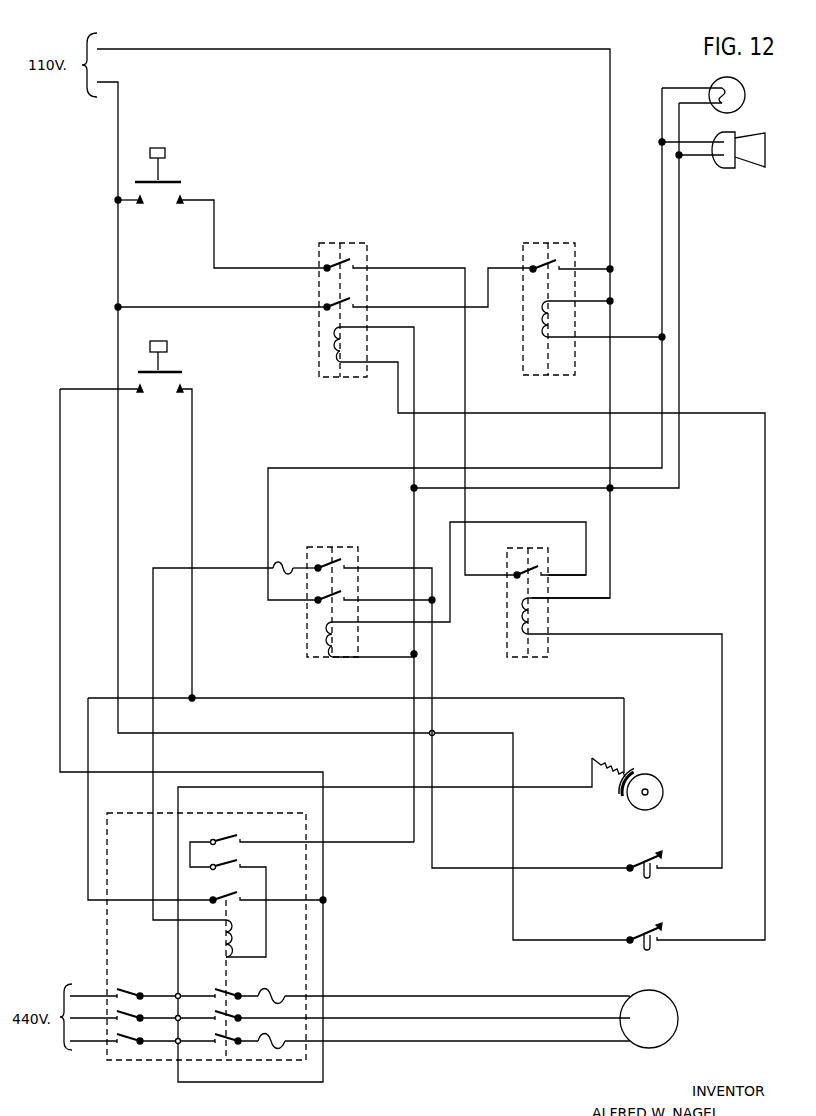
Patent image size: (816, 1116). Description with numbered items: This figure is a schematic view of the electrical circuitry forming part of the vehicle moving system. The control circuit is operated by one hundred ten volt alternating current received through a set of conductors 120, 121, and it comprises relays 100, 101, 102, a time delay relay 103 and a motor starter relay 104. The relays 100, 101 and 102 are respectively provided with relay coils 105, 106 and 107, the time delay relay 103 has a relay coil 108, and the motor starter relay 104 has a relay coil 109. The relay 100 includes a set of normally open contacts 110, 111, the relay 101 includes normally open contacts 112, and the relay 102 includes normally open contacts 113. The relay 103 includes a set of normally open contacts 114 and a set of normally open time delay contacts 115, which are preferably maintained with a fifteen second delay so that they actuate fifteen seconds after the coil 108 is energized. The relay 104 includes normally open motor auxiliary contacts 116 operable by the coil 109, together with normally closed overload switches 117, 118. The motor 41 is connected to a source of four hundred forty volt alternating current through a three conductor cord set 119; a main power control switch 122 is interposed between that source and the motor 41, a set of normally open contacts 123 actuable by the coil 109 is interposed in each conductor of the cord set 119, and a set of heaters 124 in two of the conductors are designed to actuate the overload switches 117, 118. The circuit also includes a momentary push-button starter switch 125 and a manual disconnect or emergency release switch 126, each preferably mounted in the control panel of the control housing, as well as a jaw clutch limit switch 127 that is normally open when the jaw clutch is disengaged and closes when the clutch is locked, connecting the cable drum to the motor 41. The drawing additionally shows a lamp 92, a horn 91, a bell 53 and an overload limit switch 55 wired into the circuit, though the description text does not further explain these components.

The conductor 121 is at (123, 49).
The conductor 120 is at (119, 83).
The momentary push-button starter switch 125 is at (165, 150).
The emergency release switch 126 is at (168, 348).
The relay 100 is at (367, 243).
The relay 101 is at (550, 243).
The relay 102 is at (507, 652).
The time delay relay 103 is at (349, 547).
The motor starter relay 104 is at (106, 962).
The relay coil 105 is at (335, 345).
The relay coil 106 is at (542, 322).
The relay coil 107 is at (530, 626).
The relay coil 108 is at (327, 641).
The relay coil 109 is at (226, 950).
The normally open contacts 110 is at (335, 262).
The normally open contacts 111 is at (330, 298).
The normally open contacts 112 is at (540, 262).
The normally open contacts 113 is at (522, 570).
The normally open contacts 114 is at (326, 594).
The time delay contacts 115 is at (326, 562).
The motor auxiliary contacts 116 is at (222, 897).
The overload switch 117 is at (230, 845).
The overload switch 118 is at (232, 869).
The main power control switch 122 is at (128, 995).
The normally open contacts 123 is at (232, 995).
The heaters 124 is at (272, 990).
The three conductor cord set 119 is at (89, 1044).
The signal lamp 92 is at (745, 100).
The horn 91 is at (765, 166).
The bell 53 is at (632, 778).
The overload limit switch 55 is at (643, 858).
The jaw clutch limit switch 127 is at (643, 930).
The motor 41 is at (670, 1002).